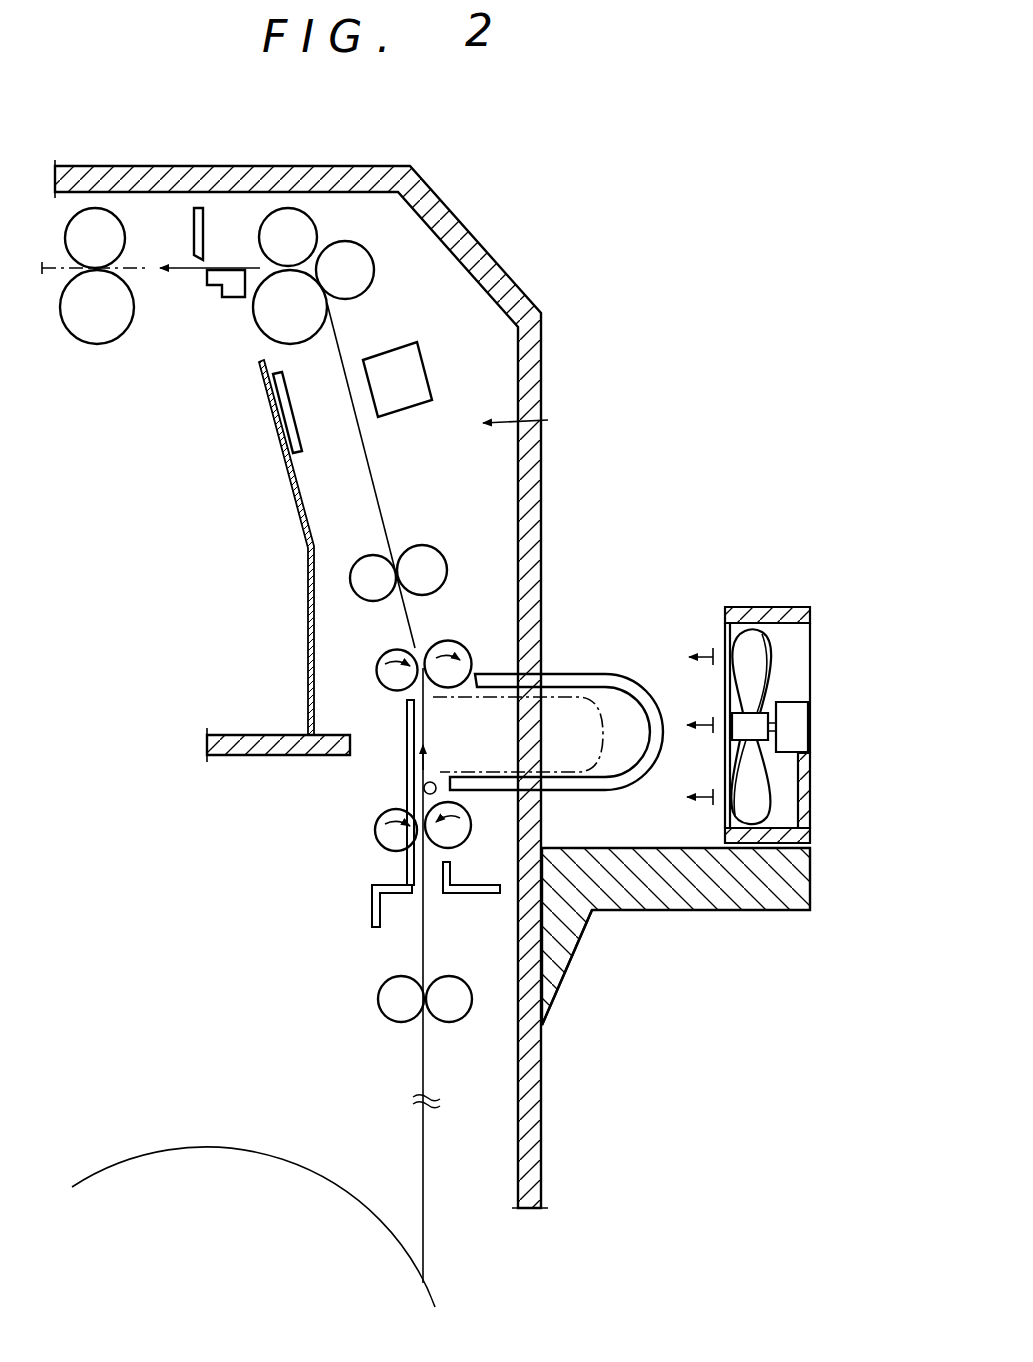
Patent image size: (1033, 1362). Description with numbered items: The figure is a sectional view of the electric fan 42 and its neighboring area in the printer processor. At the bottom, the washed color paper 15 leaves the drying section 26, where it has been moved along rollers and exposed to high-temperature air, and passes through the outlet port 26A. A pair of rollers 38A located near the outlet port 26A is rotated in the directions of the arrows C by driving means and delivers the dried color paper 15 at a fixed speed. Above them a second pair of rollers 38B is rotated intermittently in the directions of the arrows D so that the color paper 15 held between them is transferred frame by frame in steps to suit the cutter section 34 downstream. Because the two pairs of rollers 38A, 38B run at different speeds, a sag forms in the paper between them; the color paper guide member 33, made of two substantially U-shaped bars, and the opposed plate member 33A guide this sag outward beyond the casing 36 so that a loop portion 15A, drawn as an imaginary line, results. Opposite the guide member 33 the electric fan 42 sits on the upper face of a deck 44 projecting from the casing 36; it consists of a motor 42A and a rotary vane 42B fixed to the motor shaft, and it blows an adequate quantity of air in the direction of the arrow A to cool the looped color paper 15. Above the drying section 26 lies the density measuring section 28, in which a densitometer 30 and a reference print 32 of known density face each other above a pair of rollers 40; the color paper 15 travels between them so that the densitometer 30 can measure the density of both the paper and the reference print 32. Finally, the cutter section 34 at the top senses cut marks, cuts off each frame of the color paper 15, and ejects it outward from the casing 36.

The color paper 15 is at (425, 1073).
The loop portion 15A is at (582, 696).
The drying section 26 is at (250, 1048).
The outlet port 26A is at (434, 884).
The density measuring section 28 is at (548, 420).
The densitometer 30 is at (428, 388).
The reference print 32 is at (282, 420).
The color paper guide member 33 is at (633, 783).
The plate member 33A is at (407, 776).
The cutter section 34 is at (235, 220).
The casing 36 is at (545, 1073).
The rollers 38A is at (386, 822).
The rollers 38B is at (387, 686).
The rollers 40 is at (364, 566).
The electric fan 42 is at (812, 725).
The motor 42A is at (798, 710).
The rotary vane 42B is at (753, 657).
The deck 44 is at (705, 898).
The arrow A is at (700, 722).
The arrows C is at (400, 828).
The arrows D is at (393, 658).